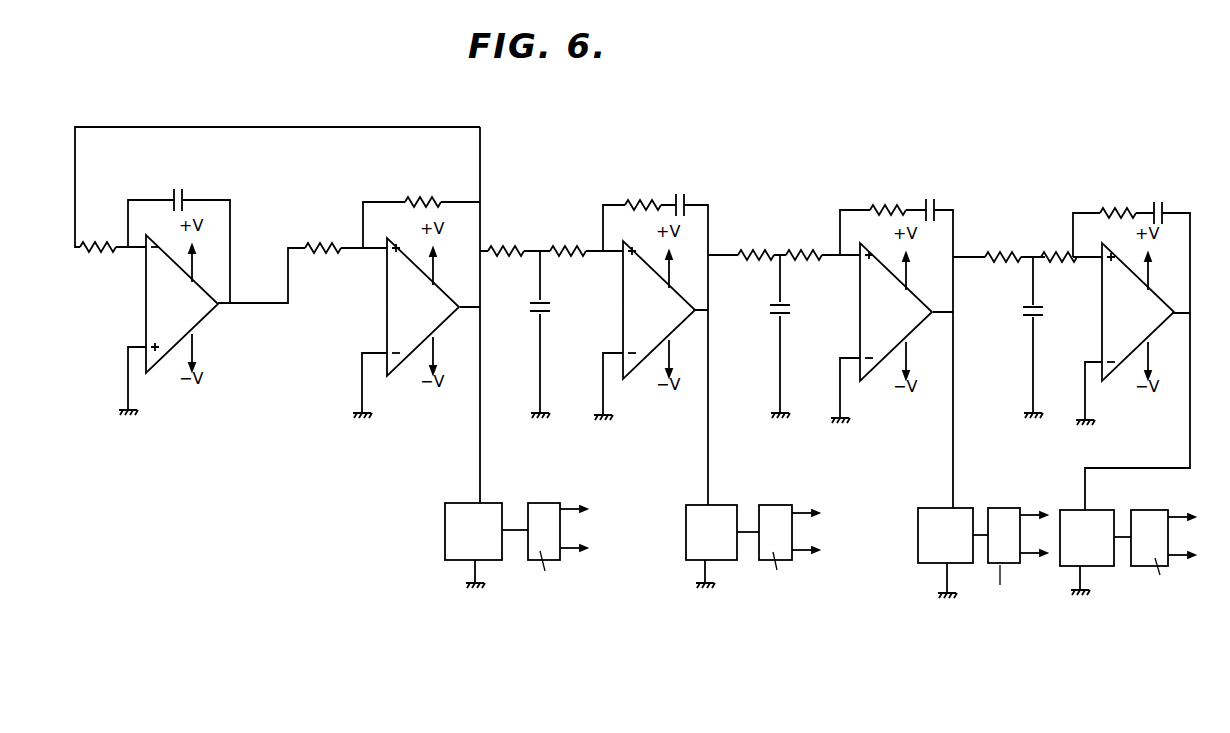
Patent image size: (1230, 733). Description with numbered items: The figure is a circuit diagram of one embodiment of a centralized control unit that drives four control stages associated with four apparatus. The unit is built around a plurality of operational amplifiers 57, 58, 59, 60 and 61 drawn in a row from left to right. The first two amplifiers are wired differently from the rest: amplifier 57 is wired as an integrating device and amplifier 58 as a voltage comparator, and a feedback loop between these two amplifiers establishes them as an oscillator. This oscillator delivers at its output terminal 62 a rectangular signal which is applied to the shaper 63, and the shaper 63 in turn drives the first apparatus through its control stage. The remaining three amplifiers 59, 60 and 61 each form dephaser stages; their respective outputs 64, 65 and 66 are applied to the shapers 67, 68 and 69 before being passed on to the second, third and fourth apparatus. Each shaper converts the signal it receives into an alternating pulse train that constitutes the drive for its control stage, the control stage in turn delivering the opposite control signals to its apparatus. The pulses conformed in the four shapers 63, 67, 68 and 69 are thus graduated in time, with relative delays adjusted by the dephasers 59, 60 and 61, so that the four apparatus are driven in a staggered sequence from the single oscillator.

The operational amplifier 57 is at (167, 346).
The operational amplifier 58 is at (387, 309).
The operational amplifier 59 is at (640, 320).
The operational amplifier 60 is at (875, 328).
The operational amplifier 61 is at (1122, 325).
The output terminal 62 is at (484, 312).
The shaper 63 is at (452, 540).
The output 64 is at (712, 314).
The output 65 is at (957, 315).
The output 66 is at (1195, 308).
The shaper 67 is at (690, 543).
The shaper 68 is at (921, 546).
The shaper 69 is at (1097, 556).